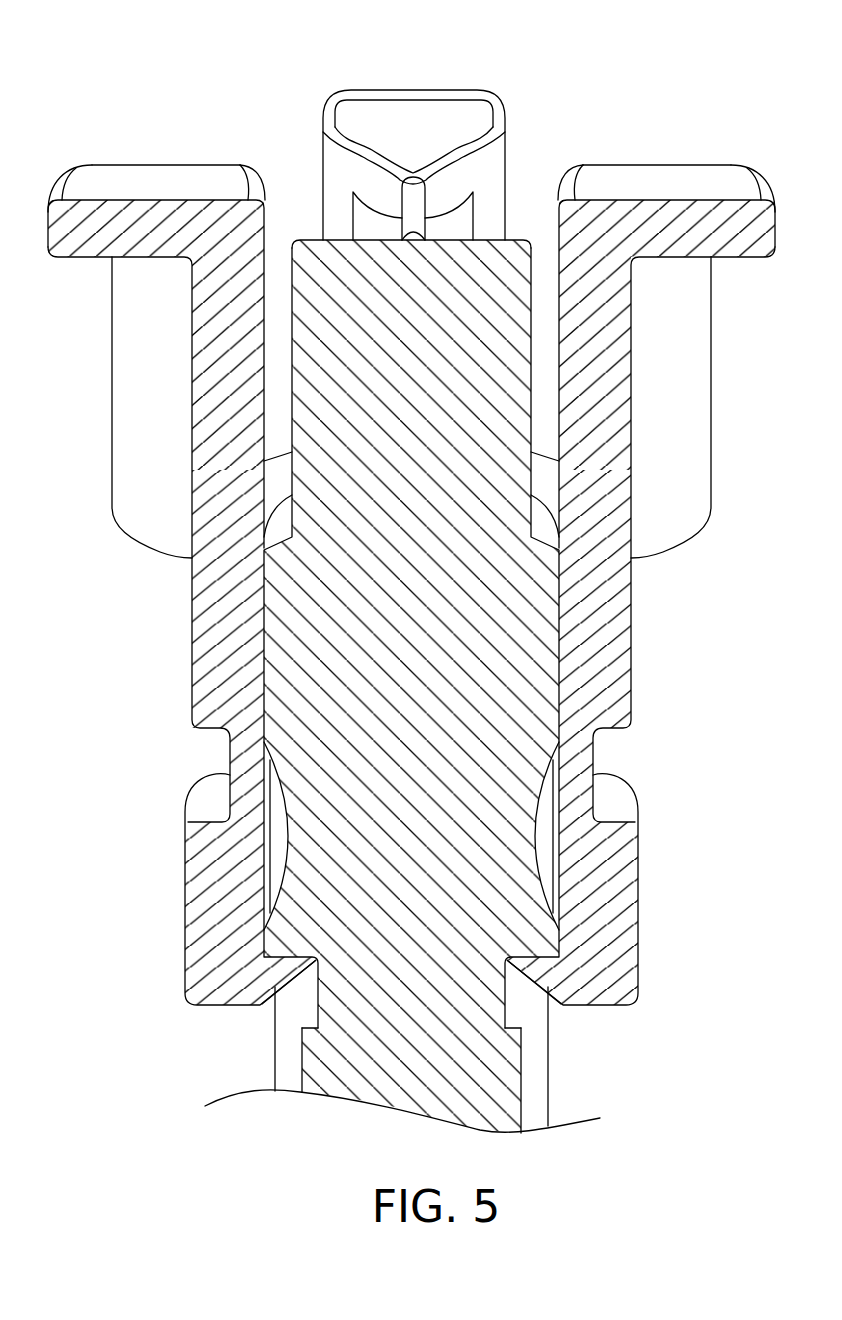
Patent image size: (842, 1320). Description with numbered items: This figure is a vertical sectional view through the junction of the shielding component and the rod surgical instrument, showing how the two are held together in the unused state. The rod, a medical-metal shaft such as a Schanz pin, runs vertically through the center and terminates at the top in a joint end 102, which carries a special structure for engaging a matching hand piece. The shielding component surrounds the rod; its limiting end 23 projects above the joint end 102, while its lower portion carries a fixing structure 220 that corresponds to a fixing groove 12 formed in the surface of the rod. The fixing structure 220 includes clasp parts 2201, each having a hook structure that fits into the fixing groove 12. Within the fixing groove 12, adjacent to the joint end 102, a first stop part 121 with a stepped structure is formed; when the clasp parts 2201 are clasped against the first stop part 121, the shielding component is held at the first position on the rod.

The limiting end 23 is at (410, 90).
The joint end 102 is at (513, 240).
The fixing structure 220 is at (618, 895).
The clasp part 2201 is at (285, 972).
The first stop part 121 is at (302, 1031).
The fixing groove 12 is at (548, 1085).